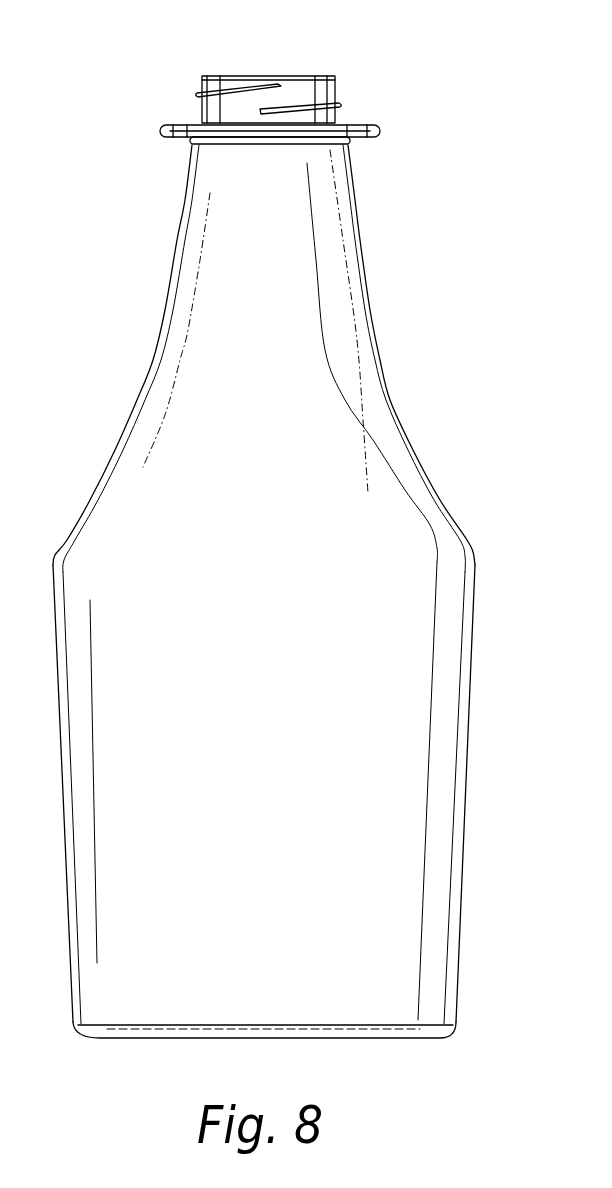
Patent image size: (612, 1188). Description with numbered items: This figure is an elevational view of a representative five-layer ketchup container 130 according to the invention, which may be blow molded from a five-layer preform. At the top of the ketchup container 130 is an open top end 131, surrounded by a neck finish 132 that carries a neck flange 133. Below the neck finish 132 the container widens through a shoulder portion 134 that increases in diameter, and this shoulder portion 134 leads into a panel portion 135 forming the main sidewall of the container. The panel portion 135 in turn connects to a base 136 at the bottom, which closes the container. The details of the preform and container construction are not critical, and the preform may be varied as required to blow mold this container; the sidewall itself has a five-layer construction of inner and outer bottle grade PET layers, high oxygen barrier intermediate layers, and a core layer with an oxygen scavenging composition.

The ketchup container 130 is at (299, 549).
The open top end 131 is at (322, 77).
The neck finish 132 is at (340, 107).
The neck flange 133 is at (373, 130).
The shoulder portion 134 is at (368, 302).
The panel portion 135 is at (472, 658).
The base 136 is at (393, 1040).